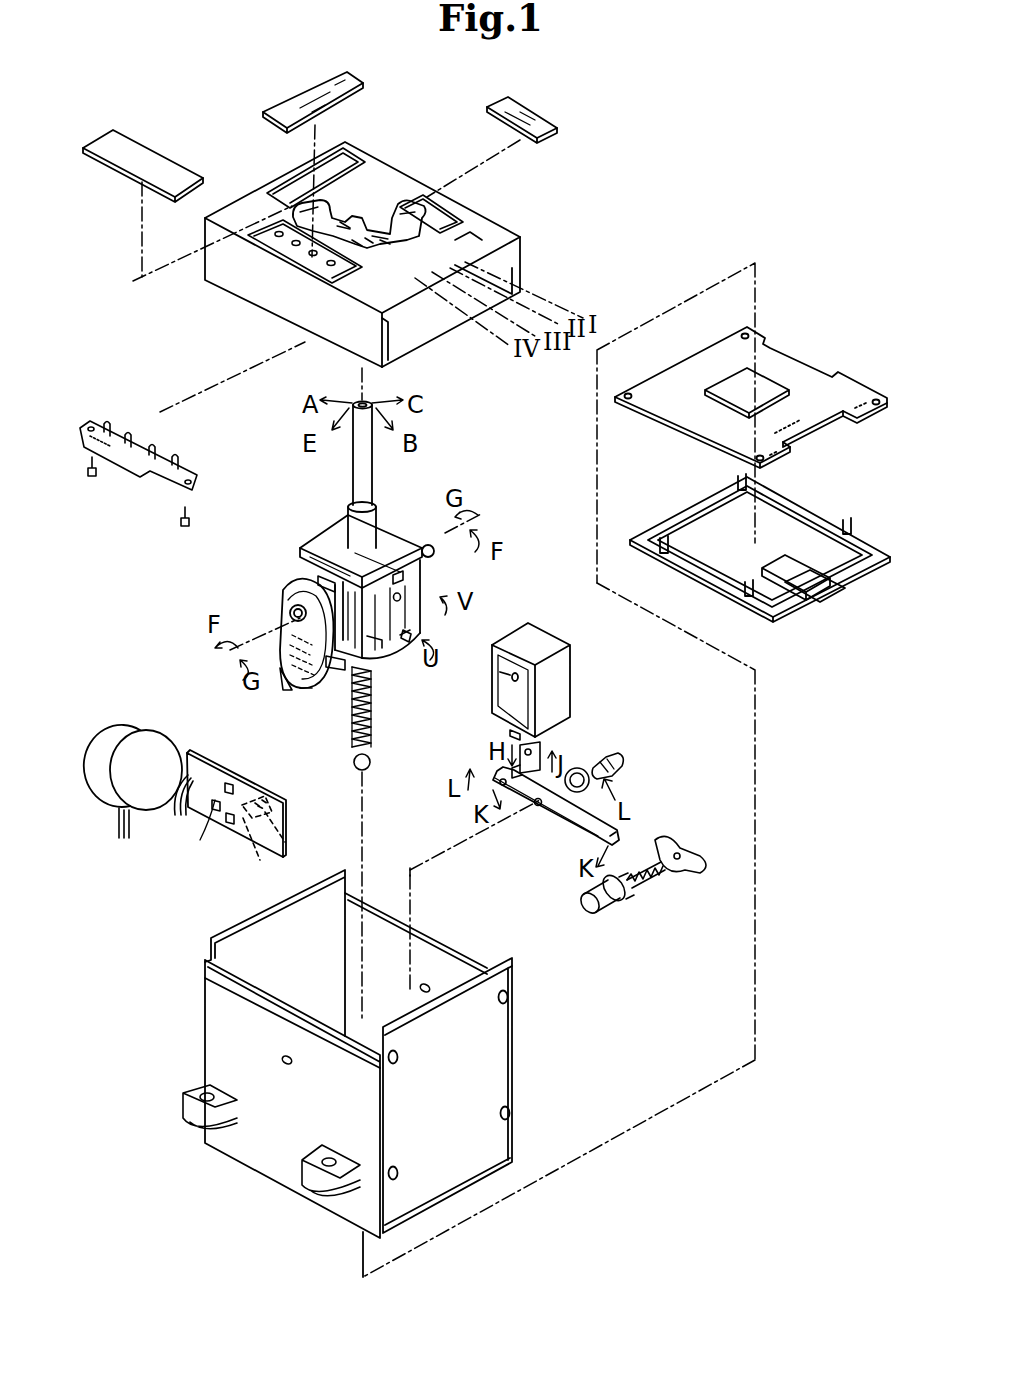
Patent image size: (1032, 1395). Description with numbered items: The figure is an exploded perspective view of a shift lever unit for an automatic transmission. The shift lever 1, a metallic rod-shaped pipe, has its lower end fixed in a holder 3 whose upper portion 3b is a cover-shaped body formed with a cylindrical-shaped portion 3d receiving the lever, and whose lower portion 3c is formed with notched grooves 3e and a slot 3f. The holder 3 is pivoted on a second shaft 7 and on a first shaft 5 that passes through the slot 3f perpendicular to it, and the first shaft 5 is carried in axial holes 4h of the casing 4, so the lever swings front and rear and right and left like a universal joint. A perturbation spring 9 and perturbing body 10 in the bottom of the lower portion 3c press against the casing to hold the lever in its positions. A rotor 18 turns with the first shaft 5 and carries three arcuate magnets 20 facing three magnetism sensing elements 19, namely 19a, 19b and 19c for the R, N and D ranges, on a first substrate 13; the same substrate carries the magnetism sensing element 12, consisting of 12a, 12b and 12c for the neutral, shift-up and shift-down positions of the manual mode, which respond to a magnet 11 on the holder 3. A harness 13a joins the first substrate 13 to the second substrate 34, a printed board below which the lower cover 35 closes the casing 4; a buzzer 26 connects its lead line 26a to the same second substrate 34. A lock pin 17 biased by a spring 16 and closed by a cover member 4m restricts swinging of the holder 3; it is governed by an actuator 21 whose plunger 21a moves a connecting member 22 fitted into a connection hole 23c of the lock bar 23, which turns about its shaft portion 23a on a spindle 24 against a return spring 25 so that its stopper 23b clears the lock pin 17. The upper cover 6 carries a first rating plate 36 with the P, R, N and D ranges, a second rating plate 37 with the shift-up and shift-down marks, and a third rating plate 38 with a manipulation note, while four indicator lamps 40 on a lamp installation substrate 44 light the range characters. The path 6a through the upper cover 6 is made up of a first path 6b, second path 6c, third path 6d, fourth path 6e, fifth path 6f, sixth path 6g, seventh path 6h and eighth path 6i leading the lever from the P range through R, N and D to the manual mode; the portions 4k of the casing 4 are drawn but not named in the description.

The shift lever 1 is at (355, 476).
The holder 3 is at (431, 604).
The upper portion 3b is at (386, 536).
The lower portion 3c is at (413, 643).
The cylindrical-shaped portion 3d is at (370, 518).
The notched grooves 3e is at (368, 668).
The slot 3f is at (333, 576).
The casing 4 is at (533, 1082).
The axial holes 4h is at (283, 1060).
The mounting bracket 4k is at (182, 1093).
The cover member 4m is at (686, 850).
The first shaft 5 is at (307, 578).
The upper cover 6 is at (262, 309).
The path 6a is at (356, 218).
The first path 6b is at (292, 203).
The second path 6c is at (248, 238).
The third path 6d is at (342, 222).
The fourth path 6e is at (445, 214).
The fifth path 6f is at (362, 247).
The sixth path 6g is at (372, 247).
The seventh path 6h is at (383, 247).
The eighth path 6i is at (465, 231).
The second shaft 7 is at (402, 598).
The perturbation spring 9 is at (370, 726).
The perturbing body 10 is at (370, 764).
The magnet 11 is at (335, 672).
The magnetism sensing element 12 is at (280, 788).
The magnetism sensing element 12a is at (286, 843).
The magnetism sensing element 12b is at (255, 840).
The magnetism sensing element 12c is at (270, 810).
The first substrate 13 is at (200, 752).
The harness 13a is at (176, 812).
The spring 16 is at (652, 878).
The lock pin 17 is at (605, 906).
The rotor 18 is at (307, 690).
The magnetism sensing elements 19 is at (214, 812).
The magnetism sensing element 19a is at (229, 782).
The magnetism sensing element 19b is at (220, 800).
The magnetism sensing element 19c is at (229, 824).
The magnets 20 is at (286, 686).
The actuator 21 is at (582, 681).
The plunger 21a is at (518, 733).
The connecting member 22 is at (541, 753).
The lock bar 23 is at (569, 829).
The shaft portion 23a is at (537, 806).
The stopper 23b is at (618, 834).
The connection hole 23c is at (499, 776).
The spindle 24 is at (619, 755).
The return spring 25 is at (590, 781).
The buzzer 26 is at (118, 735).
The lead line 26a is at (117, 830).
The second substrate 34 is at (790, 368).
The lower cover 35 is at (790, 517).
The first rating plate 36 is at (152, 157).
The second rating plate 37 is at (526, 117).
The third rating plate 38 is at (300, 98).
The indicator lamps 40 is at (175, 458).
The lamp installation substrate 44 is at (138, 470).